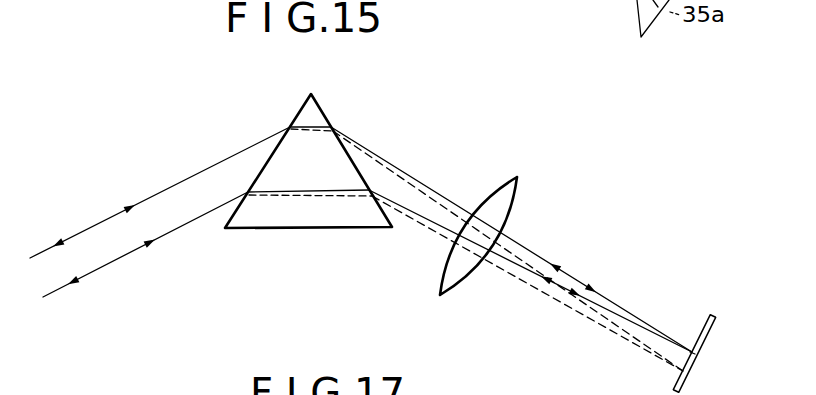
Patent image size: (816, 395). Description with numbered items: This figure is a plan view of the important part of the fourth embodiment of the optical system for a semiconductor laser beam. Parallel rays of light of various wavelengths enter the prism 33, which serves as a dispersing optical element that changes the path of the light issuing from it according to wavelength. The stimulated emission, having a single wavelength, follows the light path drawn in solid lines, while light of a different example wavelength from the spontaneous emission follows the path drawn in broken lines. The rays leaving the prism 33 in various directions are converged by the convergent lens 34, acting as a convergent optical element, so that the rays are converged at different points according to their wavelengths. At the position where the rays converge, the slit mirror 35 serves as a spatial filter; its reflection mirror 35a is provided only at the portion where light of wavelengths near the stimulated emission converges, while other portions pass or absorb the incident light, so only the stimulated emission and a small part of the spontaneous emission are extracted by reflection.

The prism 33 is at (313, 110).
The convergent lens 34 is at (503, 198).
The slit mirror 35 is at (706, 327).
The reflection mirror 35a is at (697, 357).